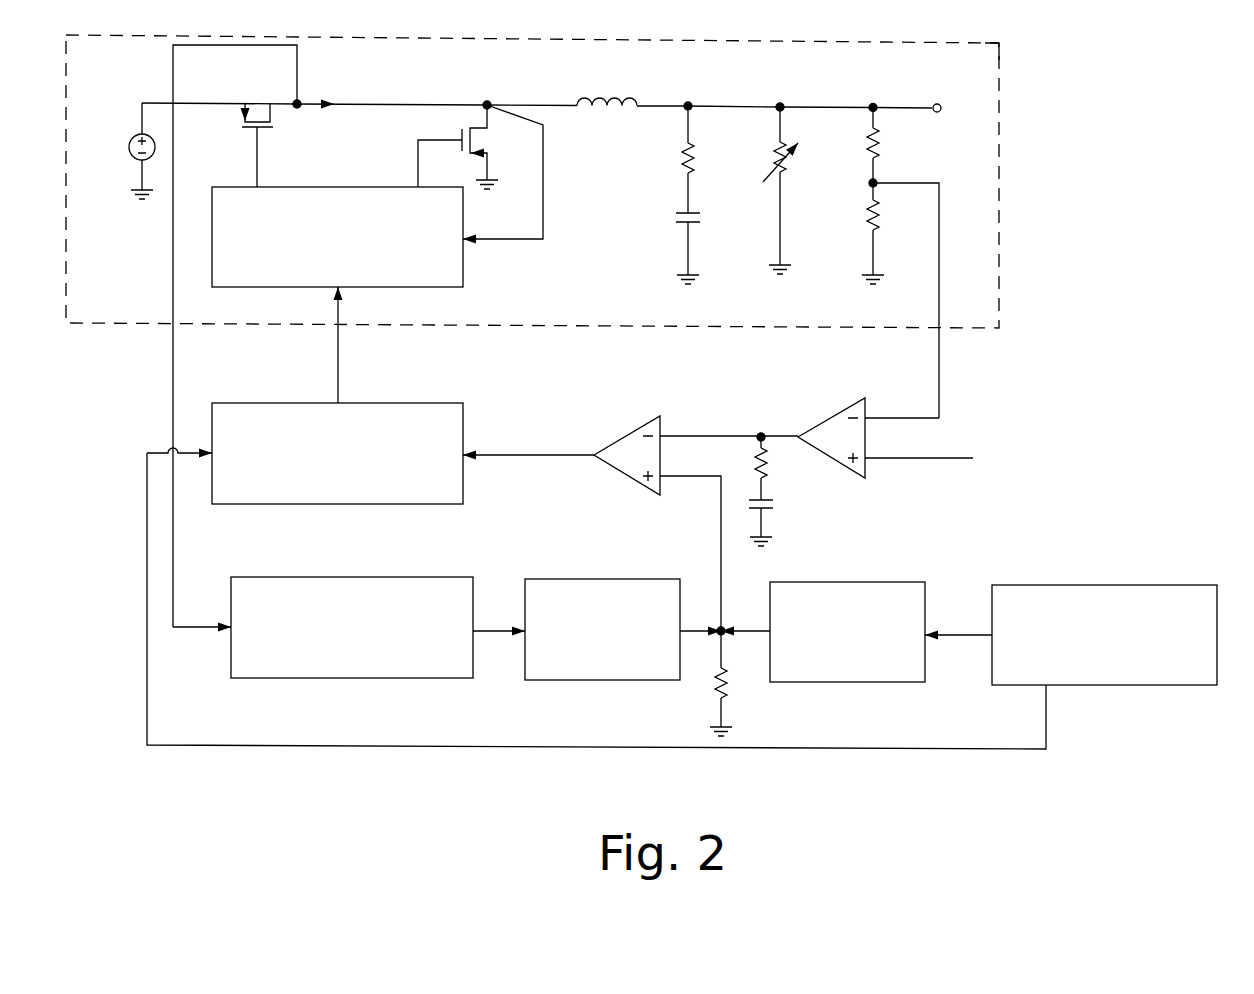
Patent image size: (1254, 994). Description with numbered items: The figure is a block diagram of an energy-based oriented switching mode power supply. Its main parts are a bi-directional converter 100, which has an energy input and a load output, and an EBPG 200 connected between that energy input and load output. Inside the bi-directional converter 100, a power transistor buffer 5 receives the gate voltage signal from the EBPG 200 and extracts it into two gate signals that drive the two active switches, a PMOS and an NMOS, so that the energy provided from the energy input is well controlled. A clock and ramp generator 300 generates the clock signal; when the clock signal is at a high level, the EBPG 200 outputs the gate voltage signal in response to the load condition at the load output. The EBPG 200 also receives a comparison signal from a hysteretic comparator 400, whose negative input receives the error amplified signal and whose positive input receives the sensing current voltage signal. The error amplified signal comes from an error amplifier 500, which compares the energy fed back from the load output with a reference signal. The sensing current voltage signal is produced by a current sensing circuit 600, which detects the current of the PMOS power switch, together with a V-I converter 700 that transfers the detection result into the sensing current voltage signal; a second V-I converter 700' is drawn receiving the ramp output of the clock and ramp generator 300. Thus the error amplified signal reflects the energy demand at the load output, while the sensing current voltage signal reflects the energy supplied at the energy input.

The bi-directional converter 100 is at (999, 184).
The power transistor buffer 5 is at (212, 245).
The EBPG 200 is at (396, 403).
The clock and ramp generator 300 is at (1105, 585).
The hysteretic comparator 400 is at (622, 435).
The error amplifier 500 is at (830, 417).
The current sensing circuit 600 is at (366, 678).
The V-I converter 700 is at (620, 692).
The V-I converter 700' is at (856, 693).